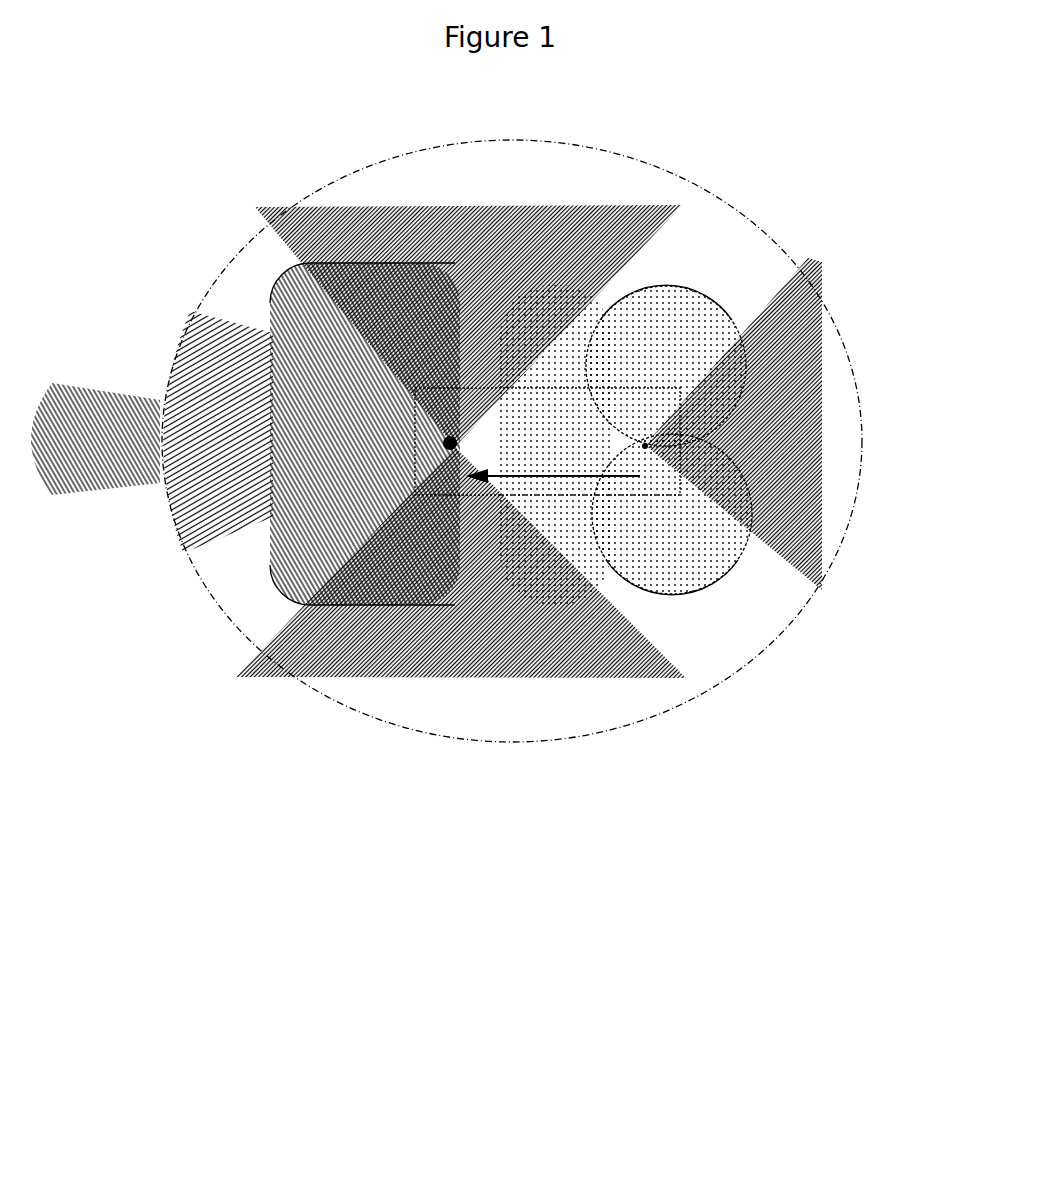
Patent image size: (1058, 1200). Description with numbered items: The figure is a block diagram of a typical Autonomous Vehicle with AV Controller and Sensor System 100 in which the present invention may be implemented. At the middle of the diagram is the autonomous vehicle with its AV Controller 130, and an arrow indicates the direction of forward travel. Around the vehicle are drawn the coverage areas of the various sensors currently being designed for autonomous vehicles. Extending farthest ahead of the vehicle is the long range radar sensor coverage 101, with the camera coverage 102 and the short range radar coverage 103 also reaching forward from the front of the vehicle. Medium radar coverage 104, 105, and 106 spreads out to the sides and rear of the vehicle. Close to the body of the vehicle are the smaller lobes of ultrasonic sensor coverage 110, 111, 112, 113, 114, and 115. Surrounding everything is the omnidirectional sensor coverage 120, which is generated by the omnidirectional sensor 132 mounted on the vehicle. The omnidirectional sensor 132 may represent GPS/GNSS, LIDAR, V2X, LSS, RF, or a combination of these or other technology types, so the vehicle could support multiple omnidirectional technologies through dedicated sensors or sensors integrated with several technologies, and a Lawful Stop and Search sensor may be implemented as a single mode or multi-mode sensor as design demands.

The Autonomous Vehicle with AV Controller and Sensor System 100 is at (447, 950).
The long range radar sensor coverage 101 is at (73, 493).
The camera coverage 102 is at (167, 517).
The short range radar coverage 103 is at (267, 517).
The medium radar coverage 104 is at (548, 682).
The medium radar coverage 105 is at (628, 202).
The medium radar coverage 106 is at (810, 266).
The ultrasonic sensor coverage 110 is at (290, 603).
The ultrasonic sensor coverage 111 is at (293, 263).
The ultrasonic sensor coverage 112 is at (603, 590).
The ultrasonic sensor coverage 113 is at (607, 297).
The ultrasonic sensor coverage 114 is at (712, 598).
The ultrasonic sensor coverage 115 is at (702, 282).
The omnidirectional sensor coverage 120 is at (853, 540).
The AV Controller 130 is at (641, 443).
The omnidirectional sensor 132 is at (440, 437).